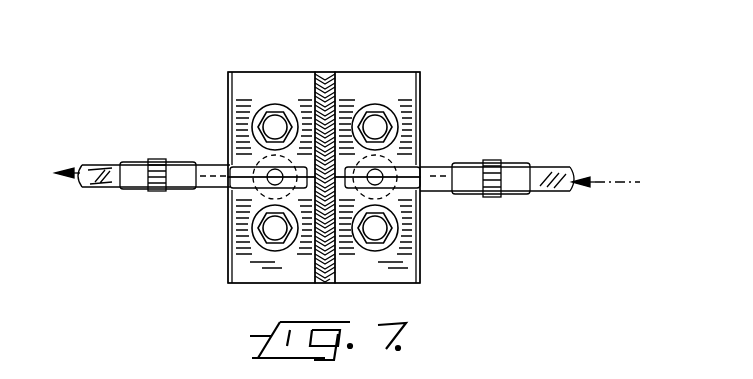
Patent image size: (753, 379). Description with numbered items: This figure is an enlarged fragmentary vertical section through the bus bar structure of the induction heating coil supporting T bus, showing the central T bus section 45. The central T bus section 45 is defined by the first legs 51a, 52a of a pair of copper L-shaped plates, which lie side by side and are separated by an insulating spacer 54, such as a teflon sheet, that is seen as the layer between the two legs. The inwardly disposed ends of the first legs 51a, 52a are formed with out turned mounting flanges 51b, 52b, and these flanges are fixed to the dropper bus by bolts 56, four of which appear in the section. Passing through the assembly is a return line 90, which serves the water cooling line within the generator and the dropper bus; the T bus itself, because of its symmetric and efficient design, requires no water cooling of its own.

The central T bus section 45 is at (300, 80).
The first leg of L-shaped plate 51a is at (310, 105).
The out turned mounting flange 51b is at (262, 278).
The first leg of L-shaped plate 52a is at (355, 90).
The out turned mounting flange 52b is at (395, 268).
The insulating spacer 54 is at (325, 76).
The bolts 56 is at (266, 130).
The return line 90 is at (550, 170).